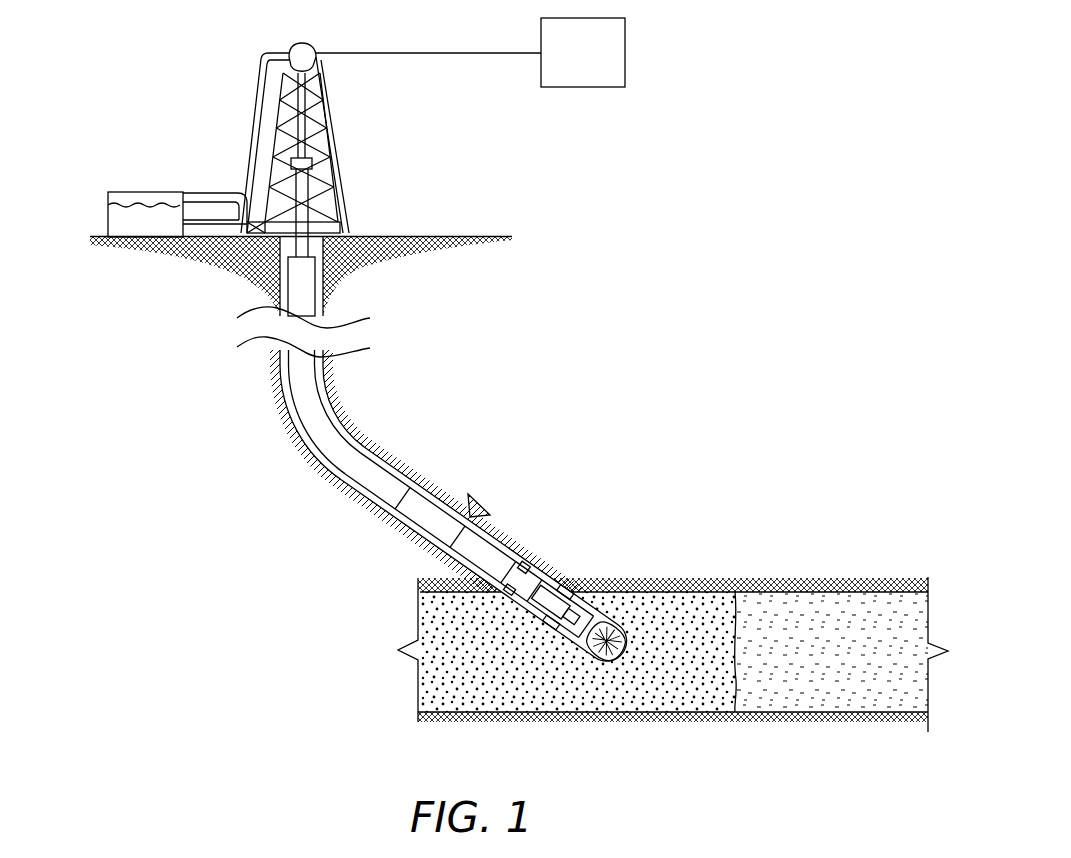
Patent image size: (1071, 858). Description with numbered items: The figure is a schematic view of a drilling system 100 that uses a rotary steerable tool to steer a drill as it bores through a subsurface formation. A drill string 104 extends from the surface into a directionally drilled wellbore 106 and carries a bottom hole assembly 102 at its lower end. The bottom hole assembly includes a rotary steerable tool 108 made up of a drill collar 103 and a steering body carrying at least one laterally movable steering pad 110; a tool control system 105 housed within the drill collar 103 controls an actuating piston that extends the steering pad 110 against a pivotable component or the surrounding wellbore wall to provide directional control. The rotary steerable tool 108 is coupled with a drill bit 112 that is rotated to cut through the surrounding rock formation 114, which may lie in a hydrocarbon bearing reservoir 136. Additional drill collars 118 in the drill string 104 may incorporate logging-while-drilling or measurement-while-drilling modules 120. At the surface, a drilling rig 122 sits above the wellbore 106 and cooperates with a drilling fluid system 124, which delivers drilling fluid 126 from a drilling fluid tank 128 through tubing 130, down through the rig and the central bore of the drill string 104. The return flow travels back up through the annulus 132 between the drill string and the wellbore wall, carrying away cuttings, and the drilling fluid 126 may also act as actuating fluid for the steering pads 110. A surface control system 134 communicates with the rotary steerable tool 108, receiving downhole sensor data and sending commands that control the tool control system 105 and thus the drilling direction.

The drilling system 100 is at (97, 62).
The bottom hole assembly 102 is at (372, 518).
The drill collar 103 is at (538, 600).
The drill string 104 is at (333, 434).
The tool control system 105 is at (541, 565).
The wellbore 106 is at (294, 412).
The rotary steerable tool 108 is at (520, 548).
The steering pad 110 is at (565, 585).
The drill bit 112 is at (603, 614).
The rock formation 114 is at (693, 664).
The additional drill collar 118 is at (474, 500).
The logging-while-drilling and/or measurement-while-drilling module 120 is at (455, 555).
The drilling rig 122 is at (344, 137).
The drilling fluid system 124 is at (163, 158).
The drilling fluid 126 is at (118, 195).
The drilling fluid tank 128 is at (108, 222).
The tubing 130 is at (251, 122).
The annulus 132 is at (283, 378).
The surface control system 134 is at (598, 66).
The hydrocarbon bearing reservoir 136 is at (852, 662).